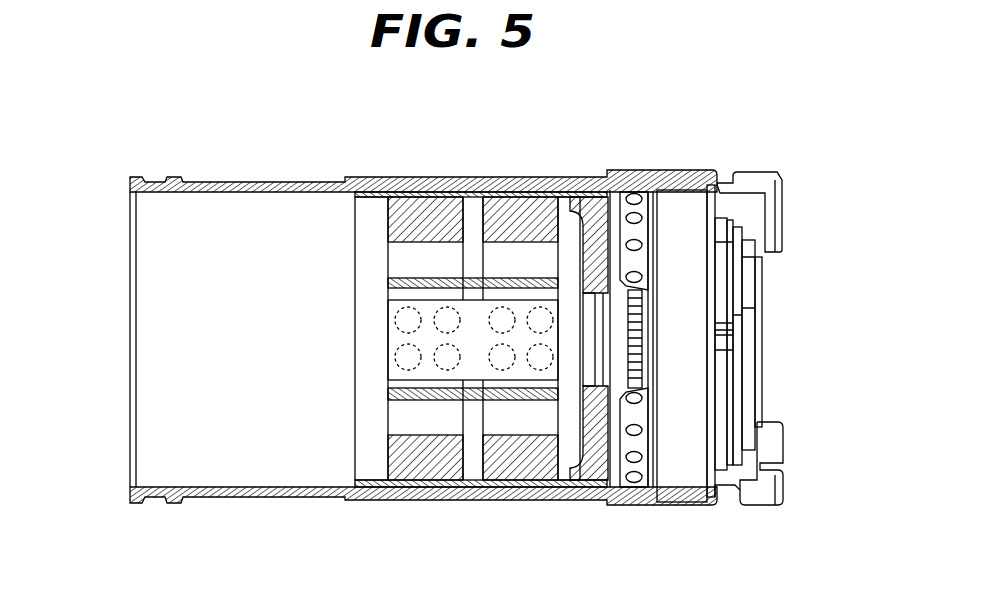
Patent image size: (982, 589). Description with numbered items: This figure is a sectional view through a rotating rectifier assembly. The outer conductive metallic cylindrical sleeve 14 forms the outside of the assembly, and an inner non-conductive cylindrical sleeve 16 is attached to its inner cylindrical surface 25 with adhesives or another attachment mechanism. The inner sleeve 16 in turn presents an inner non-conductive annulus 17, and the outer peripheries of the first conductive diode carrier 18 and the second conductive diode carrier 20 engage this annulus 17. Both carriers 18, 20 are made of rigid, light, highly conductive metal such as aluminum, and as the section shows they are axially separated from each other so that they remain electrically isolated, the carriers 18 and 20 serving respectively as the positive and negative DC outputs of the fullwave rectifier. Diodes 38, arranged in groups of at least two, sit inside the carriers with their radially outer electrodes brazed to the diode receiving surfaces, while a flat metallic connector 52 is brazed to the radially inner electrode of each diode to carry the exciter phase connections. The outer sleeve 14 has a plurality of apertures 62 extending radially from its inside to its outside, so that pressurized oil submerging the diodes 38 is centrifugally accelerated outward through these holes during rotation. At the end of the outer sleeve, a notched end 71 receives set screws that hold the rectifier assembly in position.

The outer conductive metallic cylindrical sleeve 14 is at (264, 178).
The inner cylindrical surface 25 is at (150, 200).
The inner non-conductive cylindrical sleeve 16 is at (378, 187).
The inner non-conductive annulus 17 is at (358, 206).
The apertures 62 is at (633, 199).
The diodes 38 is at (390, 330).
The flat metallic connector 52 is at (392, 397).
The second conductive diode carrier 20 is at (420, 462).
The first conductive diode carrier 18 is at (512, 460).
The notched end 71 is at (770, 458).